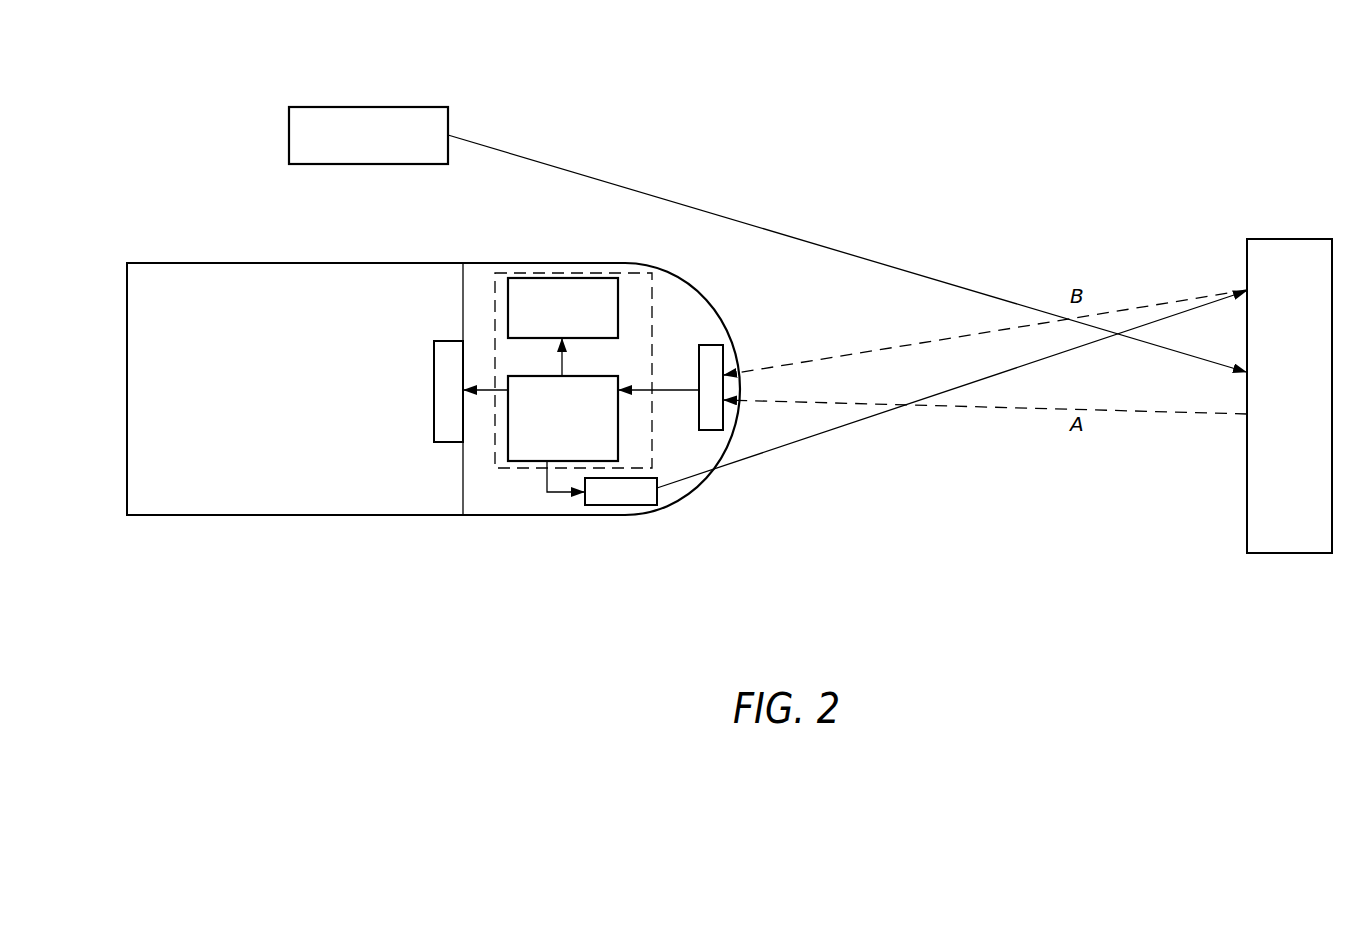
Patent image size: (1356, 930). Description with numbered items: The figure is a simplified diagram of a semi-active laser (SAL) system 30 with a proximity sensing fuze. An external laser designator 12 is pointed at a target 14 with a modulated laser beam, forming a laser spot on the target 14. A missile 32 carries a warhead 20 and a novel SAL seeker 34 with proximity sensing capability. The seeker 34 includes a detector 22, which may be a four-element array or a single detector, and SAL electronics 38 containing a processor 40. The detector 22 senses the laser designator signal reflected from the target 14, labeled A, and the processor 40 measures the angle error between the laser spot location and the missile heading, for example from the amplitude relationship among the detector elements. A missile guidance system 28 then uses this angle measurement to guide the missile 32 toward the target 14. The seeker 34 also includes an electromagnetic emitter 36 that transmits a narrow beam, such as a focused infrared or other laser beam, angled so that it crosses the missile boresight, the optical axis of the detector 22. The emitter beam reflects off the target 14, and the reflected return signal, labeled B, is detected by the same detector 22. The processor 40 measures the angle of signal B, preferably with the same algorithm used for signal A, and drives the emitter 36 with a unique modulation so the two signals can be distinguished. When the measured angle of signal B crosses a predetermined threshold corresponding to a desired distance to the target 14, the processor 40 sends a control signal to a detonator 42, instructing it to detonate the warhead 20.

The external laser designator 12 is at (313, 107).
The target 14 is at (1291, 239).
The warhead 20 is at (190, 507).
The detector 22 is at (710, 345).
The missile guidance system 28 is at (593, 278).
The SAL system 30 is at (1093, 166).
The missile 32 is at (161, 263).
The SAL seeker 34 is at (495, 505).
The electromagnetic emitter 36 is at (620, 505).
The SAL electronics 38 is at (495, 279).
The processor 40 is at (525, 461).
The detonator 42 is at (434, 432).